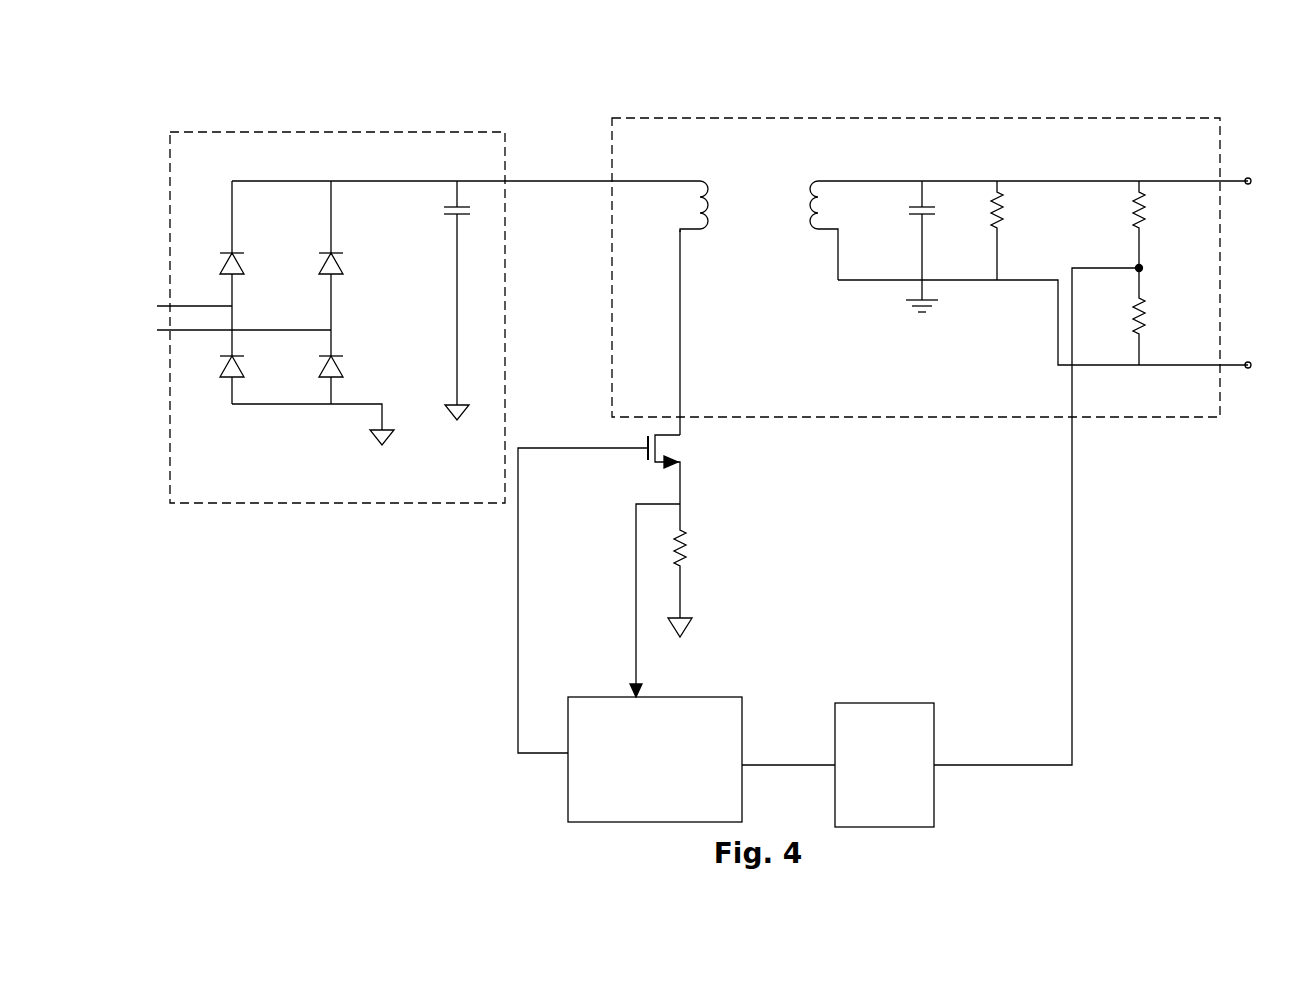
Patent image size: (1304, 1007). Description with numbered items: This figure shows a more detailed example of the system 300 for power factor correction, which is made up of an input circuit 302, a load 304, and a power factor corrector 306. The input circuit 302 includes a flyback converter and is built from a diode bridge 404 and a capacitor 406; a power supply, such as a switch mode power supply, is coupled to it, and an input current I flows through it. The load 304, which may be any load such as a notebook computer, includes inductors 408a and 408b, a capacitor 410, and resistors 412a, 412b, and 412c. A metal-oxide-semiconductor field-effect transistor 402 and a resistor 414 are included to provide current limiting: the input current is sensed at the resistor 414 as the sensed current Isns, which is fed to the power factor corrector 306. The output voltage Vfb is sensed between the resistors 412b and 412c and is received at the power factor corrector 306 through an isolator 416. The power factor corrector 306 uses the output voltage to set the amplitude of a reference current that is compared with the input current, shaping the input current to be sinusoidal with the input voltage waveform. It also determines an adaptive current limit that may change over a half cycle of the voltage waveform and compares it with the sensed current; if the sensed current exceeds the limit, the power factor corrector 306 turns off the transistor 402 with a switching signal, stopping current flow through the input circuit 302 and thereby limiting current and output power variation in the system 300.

The system 300 is at (1250, 36).
The input circuit 302 is at (170, 166).
The load 304 is at (611, 135).
The power factor corrector 306 is at (609, 697).
The metal-oxide-semiconductor field-effect transistor (MOSFET) 402 is at (680, 461).
The diode bridge 404 is at (222, 268).
The capacitor 406 is at (444, 225).
The inductor 408a is at (750, 217).
The inductor 408b is at (810, 217).
The capacitor 410 is at (914, 221).
The resistor 412a is at (1004, 208).
The resistor 412b is at (1146, 208).
The resistor 412c is at (1146, 327).
The resistor 414 is at (691, 546).
The isolator 416 is at (875, 704).